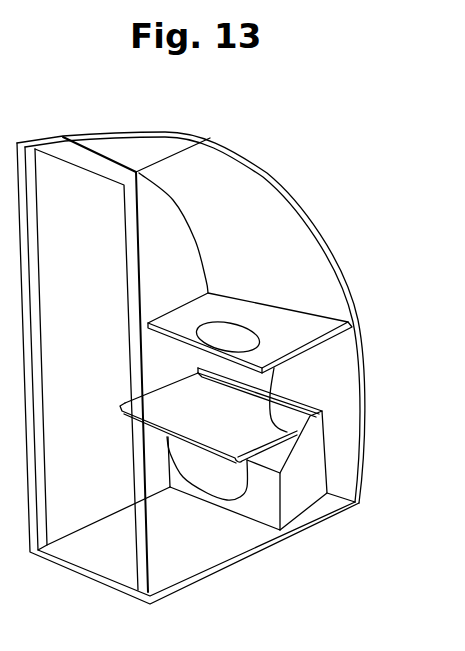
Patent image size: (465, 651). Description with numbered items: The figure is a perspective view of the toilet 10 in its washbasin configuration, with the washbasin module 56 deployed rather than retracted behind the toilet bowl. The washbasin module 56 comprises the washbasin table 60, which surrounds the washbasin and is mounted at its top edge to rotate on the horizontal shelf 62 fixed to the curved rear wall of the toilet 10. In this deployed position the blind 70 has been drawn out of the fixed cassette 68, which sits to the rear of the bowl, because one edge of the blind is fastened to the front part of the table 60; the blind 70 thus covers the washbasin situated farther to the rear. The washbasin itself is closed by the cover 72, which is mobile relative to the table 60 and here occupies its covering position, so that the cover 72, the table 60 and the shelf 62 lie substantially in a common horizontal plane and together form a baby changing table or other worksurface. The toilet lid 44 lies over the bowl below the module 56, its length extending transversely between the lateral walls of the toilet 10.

The toilet 10 is at (330, 161).
The lid 44 is at (218, 422).
The washbasin module 56 is at (302, 385).
The washbasin table 60 is at (278, 347).
The horizontal shelf 62 is at (322, 325).
The fixed cassette 68 is at (274, 378).
The blind 70 is at (300, 432).
The cover 72 is at (232, 336).